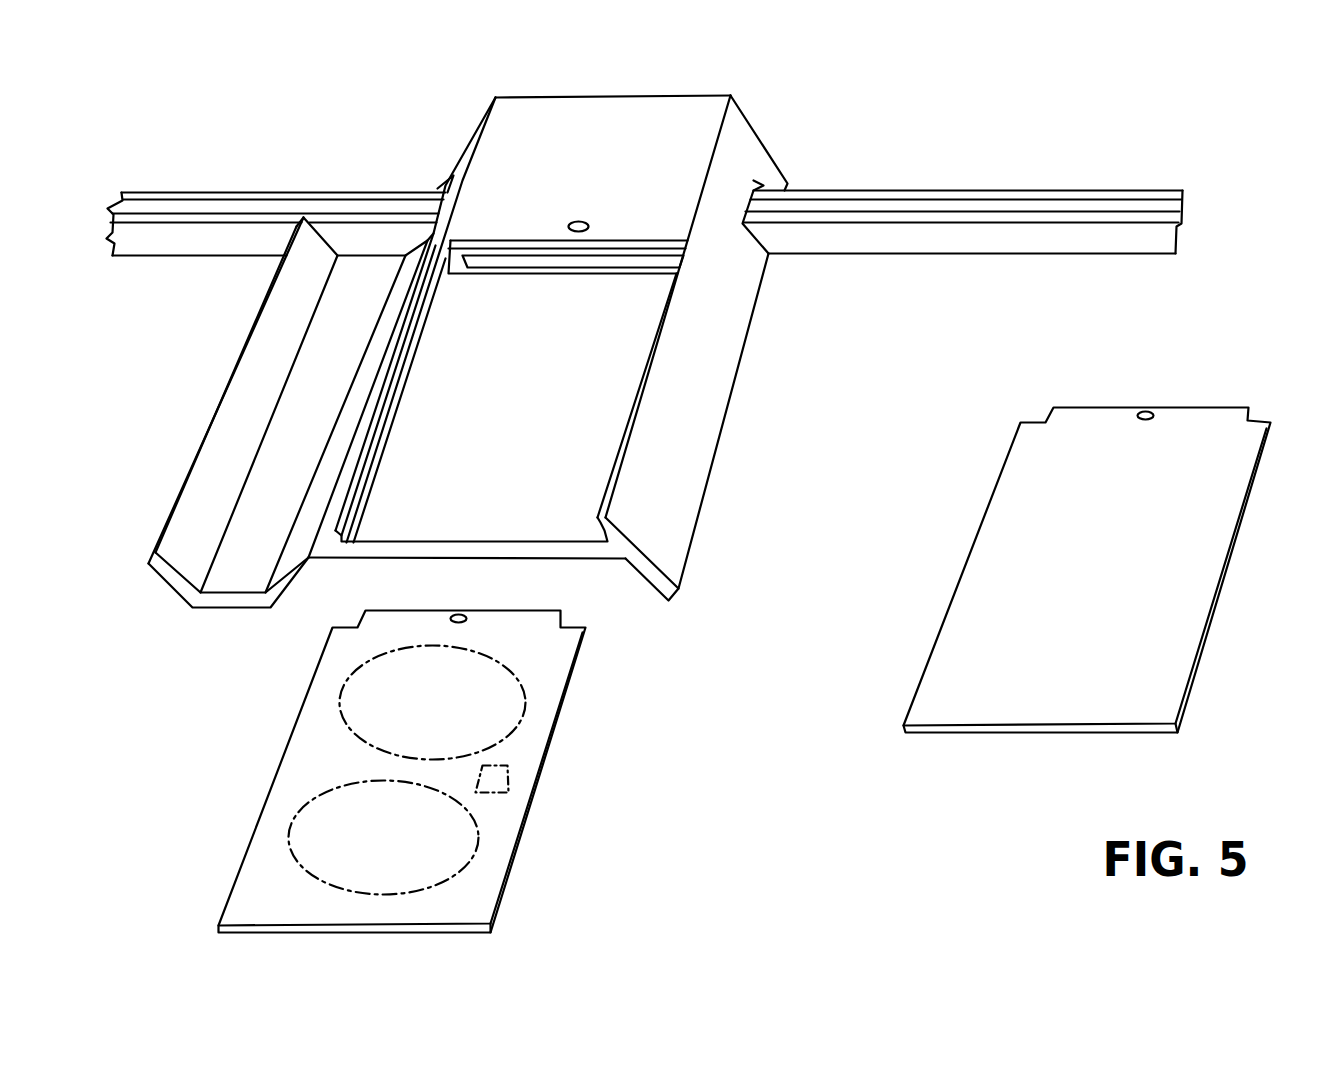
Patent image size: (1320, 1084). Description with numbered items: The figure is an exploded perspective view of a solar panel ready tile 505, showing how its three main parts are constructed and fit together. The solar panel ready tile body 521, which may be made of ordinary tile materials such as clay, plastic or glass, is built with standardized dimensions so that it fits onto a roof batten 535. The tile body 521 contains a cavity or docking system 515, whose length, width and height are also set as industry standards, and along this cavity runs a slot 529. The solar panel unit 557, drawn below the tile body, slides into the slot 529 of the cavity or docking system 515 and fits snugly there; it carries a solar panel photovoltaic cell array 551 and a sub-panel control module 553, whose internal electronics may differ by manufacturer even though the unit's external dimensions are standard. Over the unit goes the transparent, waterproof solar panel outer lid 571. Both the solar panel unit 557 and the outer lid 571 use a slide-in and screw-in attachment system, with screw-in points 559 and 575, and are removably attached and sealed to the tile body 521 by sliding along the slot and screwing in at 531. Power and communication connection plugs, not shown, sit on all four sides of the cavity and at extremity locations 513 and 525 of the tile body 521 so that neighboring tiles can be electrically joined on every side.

The tag assembly 505 is at (1234, 131).
The power and communication pathway connection plug location 513 is at (555, 348).
The cavity or docking system 515 is at (651, 333).
The solar panel ready tile body 521 is at (758, 298).
The power and communication pathway connection plug location 525 is at (225, 443).
The slot 529 is at (454, 283).
The screw-in location 531 is at (578, 221).
The roof batten 535 is at (845, 252).
The solar panel array 551 is at (472, 752).
The sub-panel control module 553 is at (517, 782).
The solar panel unit 557 is at (404, 752).
The screw-in attachment 559 is at (458, 612).
The solar panel outer lid 571 is at (1087, 552).
The screw-in attachment 575 is at (1146, 410).